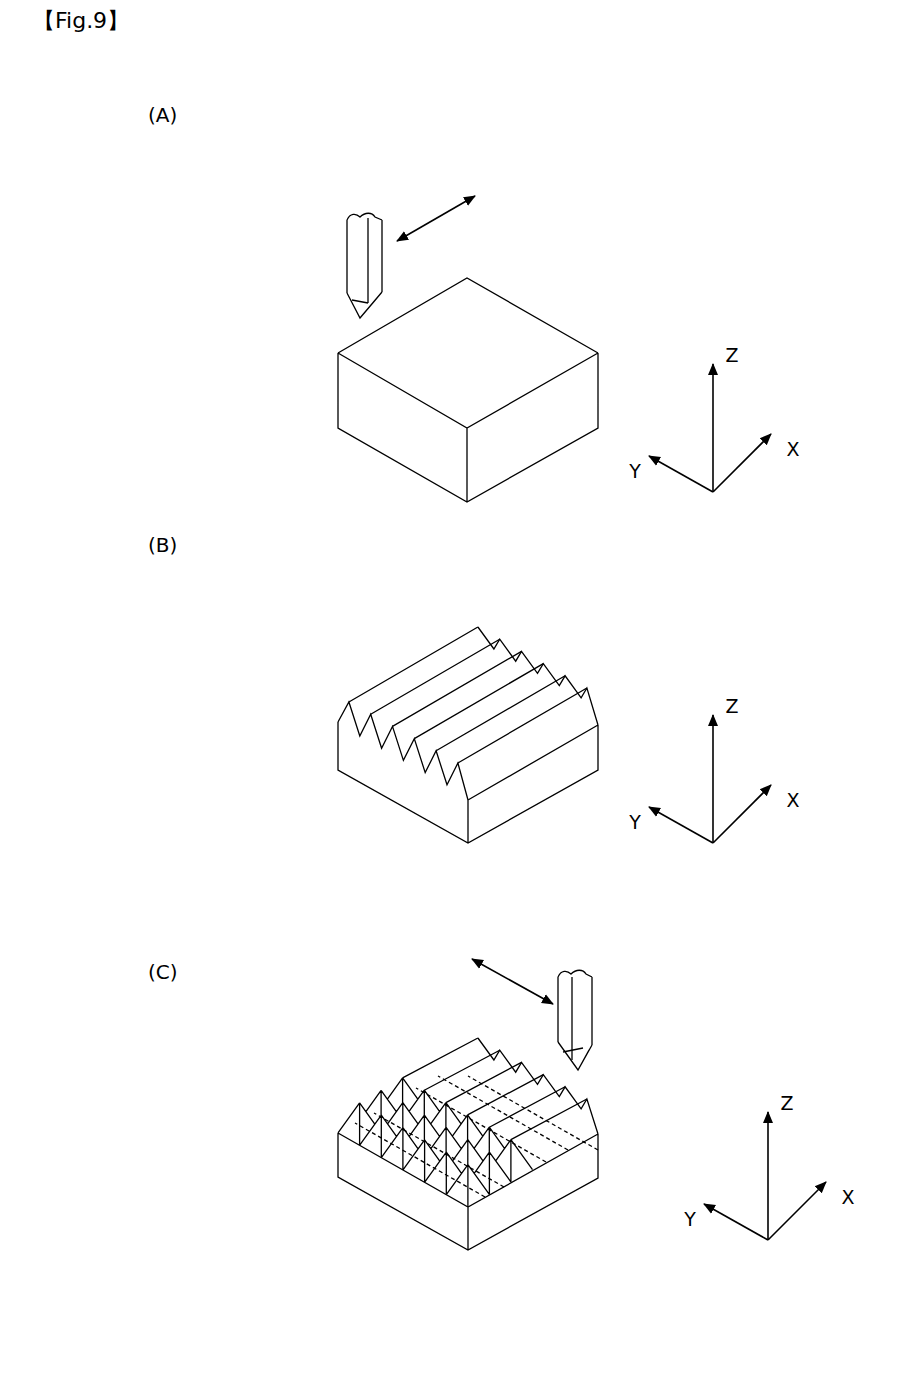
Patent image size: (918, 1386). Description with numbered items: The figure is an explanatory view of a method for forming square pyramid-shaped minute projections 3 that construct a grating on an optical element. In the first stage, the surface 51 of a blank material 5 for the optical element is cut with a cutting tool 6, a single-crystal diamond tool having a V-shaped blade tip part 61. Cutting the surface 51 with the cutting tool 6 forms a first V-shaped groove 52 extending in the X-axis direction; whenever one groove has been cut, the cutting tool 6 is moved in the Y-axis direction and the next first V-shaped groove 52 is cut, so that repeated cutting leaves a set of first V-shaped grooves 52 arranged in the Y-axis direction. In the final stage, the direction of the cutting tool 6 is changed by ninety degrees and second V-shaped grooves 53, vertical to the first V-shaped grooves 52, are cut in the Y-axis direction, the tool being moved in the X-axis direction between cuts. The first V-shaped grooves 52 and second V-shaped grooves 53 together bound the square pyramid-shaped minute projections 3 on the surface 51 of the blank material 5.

The square pyramid-shaped minute projection 3 is at (408, 1168).
The blank material 5 is at (558, 327).
The cutting tool 6 is at (347, 252).
The V-shaped blade tip part 61 is at (357, 308).
The surface 51 is at (476, 325).
The first V-shaped groove 52 is at (466, 630).
The second V-shaped groove 53 is at (485, 1197).